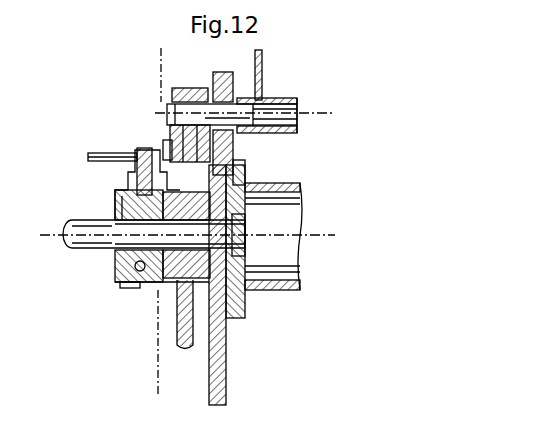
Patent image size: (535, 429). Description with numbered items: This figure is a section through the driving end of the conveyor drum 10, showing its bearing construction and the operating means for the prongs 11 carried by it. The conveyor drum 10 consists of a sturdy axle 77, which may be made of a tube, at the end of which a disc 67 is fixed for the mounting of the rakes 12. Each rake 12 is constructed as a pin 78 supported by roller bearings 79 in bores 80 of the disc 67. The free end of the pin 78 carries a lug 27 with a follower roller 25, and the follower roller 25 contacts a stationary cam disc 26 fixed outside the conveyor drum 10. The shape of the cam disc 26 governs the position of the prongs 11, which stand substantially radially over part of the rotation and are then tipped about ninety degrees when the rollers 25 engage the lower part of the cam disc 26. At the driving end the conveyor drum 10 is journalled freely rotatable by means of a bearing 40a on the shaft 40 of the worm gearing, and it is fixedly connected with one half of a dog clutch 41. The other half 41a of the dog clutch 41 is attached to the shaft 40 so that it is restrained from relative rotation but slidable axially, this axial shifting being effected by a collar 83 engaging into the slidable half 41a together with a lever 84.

The conveyor drum 10 is at (268, 308).
The prongs 11 is at (158, 56).
The rakes 12 is at (290, 99).
The follower rollers 25 is at (170, 136).
The cam disc 26 is at (188, 344).
The lugs 27 is at (172, 92).
The shaft 40 is at (72, 233).
The bearing 40a is at (233, 220).
The dog clutch 41 is at (167, 283).
The slidable half of dog clutch 41a is at (122, 270).
The disc 67 is at (222, 382).
The axle 77 is at (270, 183).
The pins 78 is at (297, 122).
The roller bearings 79 is at (212, 98).
The bores 80 is at (233, 138).
The collar 83 is at (117, 195).
The lever 84 is at (136, 151).